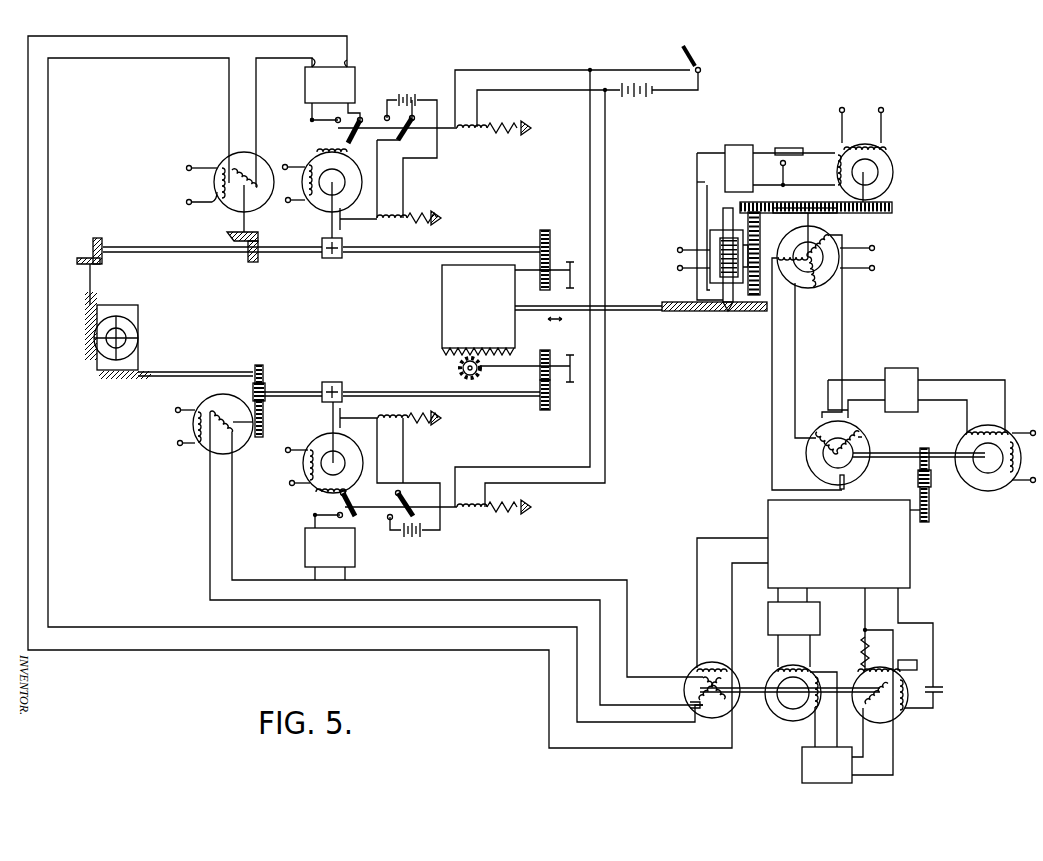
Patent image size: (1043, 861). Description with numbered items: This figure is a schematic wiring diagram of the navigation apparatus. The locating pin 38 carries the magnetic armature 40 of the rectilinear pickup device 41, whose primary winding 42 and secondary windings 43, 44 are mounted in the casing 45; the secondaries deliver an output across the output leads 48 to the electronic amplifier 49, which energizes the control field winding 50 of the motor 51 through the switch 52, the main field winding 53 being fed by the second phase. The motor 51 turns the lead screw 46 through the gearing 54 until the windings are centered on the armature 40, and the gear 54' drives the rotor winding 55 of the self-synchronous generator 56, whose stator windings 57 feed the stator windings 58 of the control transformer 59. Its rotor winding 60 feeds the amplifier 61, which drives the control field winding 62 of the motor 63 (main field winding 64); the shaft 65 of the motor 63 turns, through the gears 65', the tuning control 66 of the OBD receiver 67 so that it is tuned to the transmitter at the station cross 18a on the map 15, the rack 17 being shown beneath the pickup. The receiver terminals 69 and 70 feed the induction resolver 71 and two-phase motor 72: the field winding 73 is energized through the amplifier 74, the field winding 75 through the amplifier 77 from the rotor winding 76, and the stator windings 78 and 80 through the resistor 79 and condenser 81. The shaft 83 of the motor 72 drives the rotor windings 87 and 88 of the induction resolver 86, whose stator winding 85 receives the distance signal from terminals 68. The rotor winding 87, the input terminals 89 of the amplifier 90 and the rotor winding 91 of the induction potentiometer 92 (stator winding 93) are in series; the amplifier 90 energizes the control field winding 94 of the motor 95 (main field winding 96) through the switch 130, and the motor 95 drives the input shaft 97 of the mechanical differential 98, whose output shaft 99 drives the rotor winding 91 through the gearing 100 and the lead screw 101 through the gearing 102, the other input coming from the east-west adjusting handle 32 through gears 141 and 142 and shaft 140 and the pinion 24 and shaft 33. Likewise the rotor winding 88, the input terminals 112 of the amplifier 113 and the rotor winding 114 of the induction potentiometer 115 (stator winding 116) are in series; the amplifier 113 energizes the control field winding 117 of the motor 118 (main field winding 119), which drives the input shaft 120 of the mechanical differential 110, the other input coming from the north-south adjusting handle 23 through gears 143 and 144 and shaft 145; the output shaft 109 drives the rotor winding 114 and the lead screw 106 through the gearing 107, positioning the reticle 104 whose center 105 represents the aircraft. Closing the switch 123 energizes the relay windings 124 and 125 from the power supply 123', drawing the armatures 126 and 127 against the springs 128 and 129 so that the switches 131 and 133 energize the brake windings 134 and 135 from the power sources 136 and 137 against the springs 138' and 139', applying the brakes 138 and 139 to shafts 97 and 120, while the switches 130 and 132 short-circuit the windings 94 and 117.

The map 15 is at (442, 297).
The rack bar 17 is at (690, 312).
The station cross 18a is at (442, 326).
The north-south adjusting handle 23 is at (572, 384).
The pinion gear 24 is at (526, 360).
The east-west adjusting handle 32 is at (570, 288).
The shaft 33 is at (528, 280).
The locating pin 38 is at (718, 232).
The magnetic armature 40 is at (722, 238).
The rectilinear pickup device 41 is at (696, 299).
The primary winding 42 is at (678, 248).
The secondary winding 43 is at (716, 240).
The secondary winding 44 is at (678, 270).
The casing 45 is at (768, 214).
The lead screw 46 is at (738, 312).
The output leads 48 is at (697, 182).
The electronic amplifier 49 is at (744, 145).
The control field winding 50 is at (836, 166).
The motor 51 is at (896, 175).
The switch 52 is at (790, 150).
The main field winding 53 is at (870, 146).
The gearing 54 is at (903, 213).
The gear 54' is at (816, 196).
The rotor winding 55 is at (808, 250).
The self-synchronous generator 56 is at (838, 272).
The stator windings 57 is at (832, 236).
The stator windings 58 is at (860, 442).
The self-synchronous control transformer 59 is at (852, 470).
The rotor winding 60 is at (826, 436).
The electronic amplifier 61 is at (908, 368).
The control field winding 62 is at (984, 432).
The motor 63 is at (1008, 436).
The main field winding 64 is at (1002, 488).
The shaft 65 is at (919, 436).
The gears 65' is at (943, 485).
The tuning control 66 is at (918, 522).
The OBD receiver 67 is at (917, 577).
The terminals 68 is at (766, 562).
The terminals 69 is at (793, 583).
The terminals 70 is at (899, 635).
The induction resolver 71 is at (896, 718).
The two-phase motor 72 is at (792, 724).
The field winding 73 is at (806, 662).
The amplifier 74 is at (820, 618).
The field winding 75 is at (818, 708).
The rotor winding 76 is at (872, 714).
The amplifier 77 is at (802, 769).
The stator winding 78 is at (880, 668).
The resistor 79 is at (860, 648).
The stator winding 80 is at (905, 712).
The condenser 81 is at (942, 684).
The shaft 83 is at (750, 686).
The stator winding 85 is at (710, 664).
The induction resolver 86 is at (730, 704).
The rotor winding 87 is at (740, 676).
The rotor winding 88 is at (700, 690).
The input terminals 89 is at (329, 52).
The electronic amplifier 90 is at (356, 84).
The rotor winding 91 is at (236, 160).
The induction potentiometer 92 is at (264, 162).
The stator winding 93 is at (212, 203).
The control field winding 94 is at (336, 152).
The motor 95 is at (314, 208).
The main field winding 96 is at (296, 200).
The input shaft 97 is at (358, 224).
The mechanical differential 98 is at (332, 259).
The output shaft 99 is at (290, 253).
The gearing 100 is at (228, 238).
The lead screw 101 is at (92, 305).
The gearing 102 is at (90, 244).
The reticle 104 is at (140, 332).
The reticle center 105 is at (120, 336).
The lead screw 106 is at (122, 382).
The gearing 107 is at (252, 386).
The output shaft 109 is at (292, 391).
The mechanical differential 110 is at (343, 392).
The input terminals 112 is at (340, 582).
The electronic amplifier 113 is at (355, 560).
The rotor winding 114 is at (240, 438).
The induction potentiometer 115 is at (196, 400).
The stator winding 116 is at (193, 446).
The control field winding 117 is at (320, 494).
The motor 118 is at (316, 438).
The main field winding 119 is at (298, 485).
The input shaft 120 is at (330, 410).
The switch 123 is at (682, 50).
The power supply 123' is at (651, 97).
The relay winding 124 is at (466, 134).
The relay winding 125 is at (466, 513).
The armature 126 is at (497, 125).
The armature 127 is at (494, 512).
The spring 128 is at (519, 130).
The spring 129 is at (530, 504).
The switch 130 is at (358, 128).
The switch 131 is at (408, 140).
The switch 132 is at (352, 508).
The switch 133 is at (404, 500).
The brake winding 134 is at (418, 214).
The brake winding 135 is at (400, 416).
The power source 136 is at (416, 94).
The power source 137 is at (412, 538).
The brake 138 is at (400, 227).
The spring 138' is at (446, 205).
The brake 139 is at (359, 412).
The spring 139' is at (424, 431).
The shaft 140 is at (466, 246).
The gear 141 is at (548, 232).
The gear 142 is at (550, 272).
The gear 143 is at (538, 380).
The gear 144 is at (538, 408).
The shaft 145 is at (484, 397).